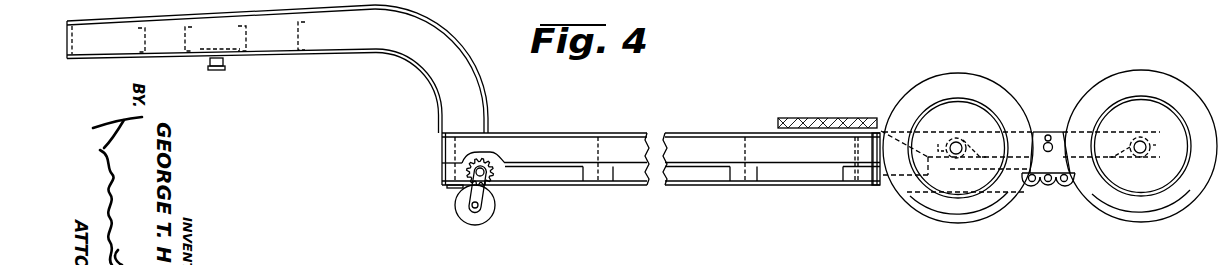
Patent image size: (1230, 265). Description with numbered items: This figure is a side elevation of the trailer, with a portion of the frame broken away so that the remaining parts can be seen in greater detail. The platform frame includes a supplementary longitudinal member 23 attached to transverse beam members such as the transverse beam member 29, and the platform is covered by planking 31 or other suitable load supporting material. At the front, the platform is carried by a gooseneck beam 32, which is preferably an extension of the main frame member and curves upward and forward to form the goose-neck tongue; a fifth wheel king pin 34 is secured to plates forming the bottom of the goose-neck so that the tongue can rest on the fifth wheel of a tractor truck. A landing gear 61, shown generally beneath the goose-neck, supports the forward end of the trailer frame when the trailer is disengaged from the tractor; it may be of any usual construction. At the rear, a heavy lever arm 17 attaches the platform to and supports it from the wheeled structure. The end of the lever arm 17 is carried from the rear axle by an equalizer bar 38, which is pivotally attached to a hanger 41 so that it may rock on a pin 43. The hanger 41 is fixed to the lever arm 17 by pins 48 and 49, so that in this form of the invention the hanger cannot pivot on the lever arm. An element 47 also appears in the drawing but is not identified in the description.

The lever arm 17 is at (880, 183).
The supplementary longitudinal member 23 is at (883, 111).
The transverse beam member 29 is at (998, 111).
The planking 31 is at (797, 118).
The gooseneck beam 32 is at (370, 46).
The fifth wheel king pin 34 is at (222, 63).
The equalizer bar 38 is at (1034, 131).
The hanger 41 is at (1052, 185).
The pin 43 is at (1053, 136).
The axle carrier 47 is at (1020, 96).
The pin 48 is at (1031, 184).
The pin 49 is at (1066, 185).
The landing gear 61 is at (442, 216).